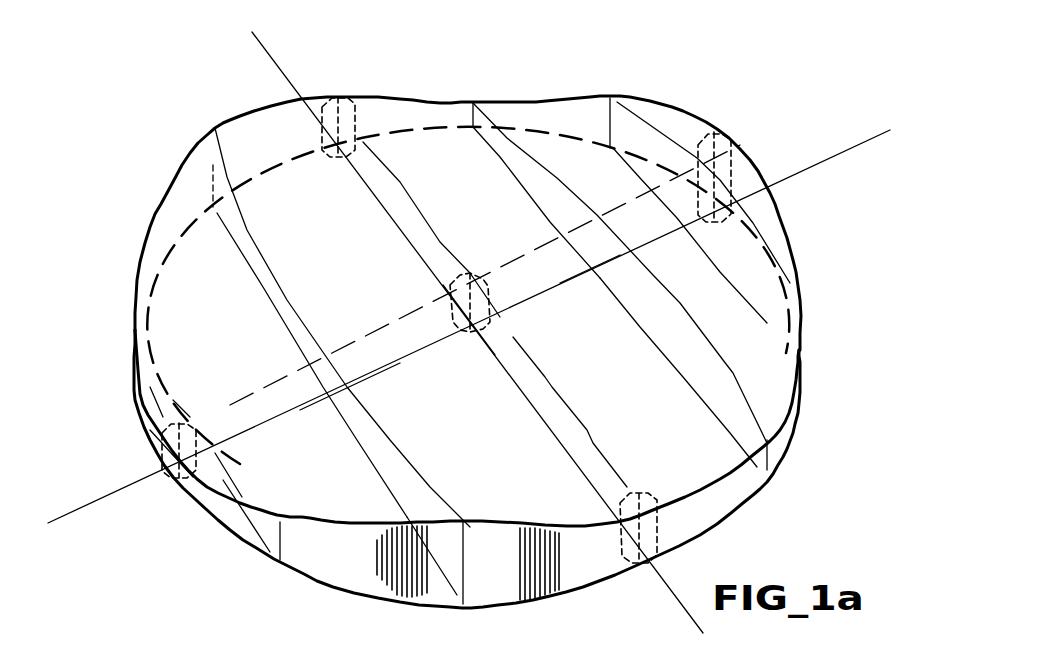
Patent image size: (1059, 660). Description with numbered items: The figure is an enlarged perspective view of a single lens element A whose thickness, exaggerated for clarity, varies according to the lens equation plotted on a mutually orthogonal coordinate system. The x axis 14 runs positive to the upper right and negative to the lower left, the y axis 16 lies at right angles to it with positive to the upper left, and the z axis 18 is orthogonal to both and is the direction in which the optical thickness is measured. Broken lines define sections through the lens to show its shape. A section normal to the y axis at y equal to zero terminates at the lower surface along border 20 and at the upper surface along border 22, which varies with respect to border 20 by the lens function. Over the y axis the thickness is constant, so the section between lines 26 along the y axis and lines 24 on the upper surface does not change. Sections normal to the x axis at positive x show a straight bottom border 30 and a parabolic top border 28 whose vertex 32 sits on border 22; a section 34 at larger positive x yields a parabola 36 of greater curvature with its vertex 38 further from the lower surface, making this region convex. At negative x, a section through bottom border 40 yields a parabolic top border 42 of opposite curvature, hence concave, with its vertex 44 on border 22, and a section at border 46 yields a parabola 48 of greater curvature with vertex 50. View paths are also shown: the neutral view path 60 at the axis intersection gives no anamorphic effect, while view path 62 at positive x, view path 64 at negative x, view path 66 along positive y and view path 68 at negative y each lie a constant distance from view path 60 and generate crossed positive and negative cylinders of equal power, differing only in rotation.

The x axis 14 is at (852, 150).
The y axis 16 is at (280, 63).
The z axis 18 is at (472, 300).
The border 20 is at (592, 272).
The border 22 is at (713, 140).
The lines 24 is at (410, 200).
The lines 26 is at (535, 412).
The border 28 is at (684, 298).
The border 30 is at (645, 334).
The vertex 32 is at (585, 206).
The section 34 is at (742, 293).
The parabola 36 is at (777, 257).
The vertex 38 is at (668, 136).
The border 40 is at (354, 434).
The border 42 is at (399, 448).
The vertex 44 is at (337, 376).
The border 46 is at (255, 525).
The parabola 48 is at (232, 478).
The vertex 50 is at (328, 360).
The view path 60 is at (470, 270).
The view path 62 is at (705, 132).
The view path 64 is at (160, 428).
The view path 66 is at (347, 110).
The view path 68 is at (655, 497).
The lens element A is at (330, 553).